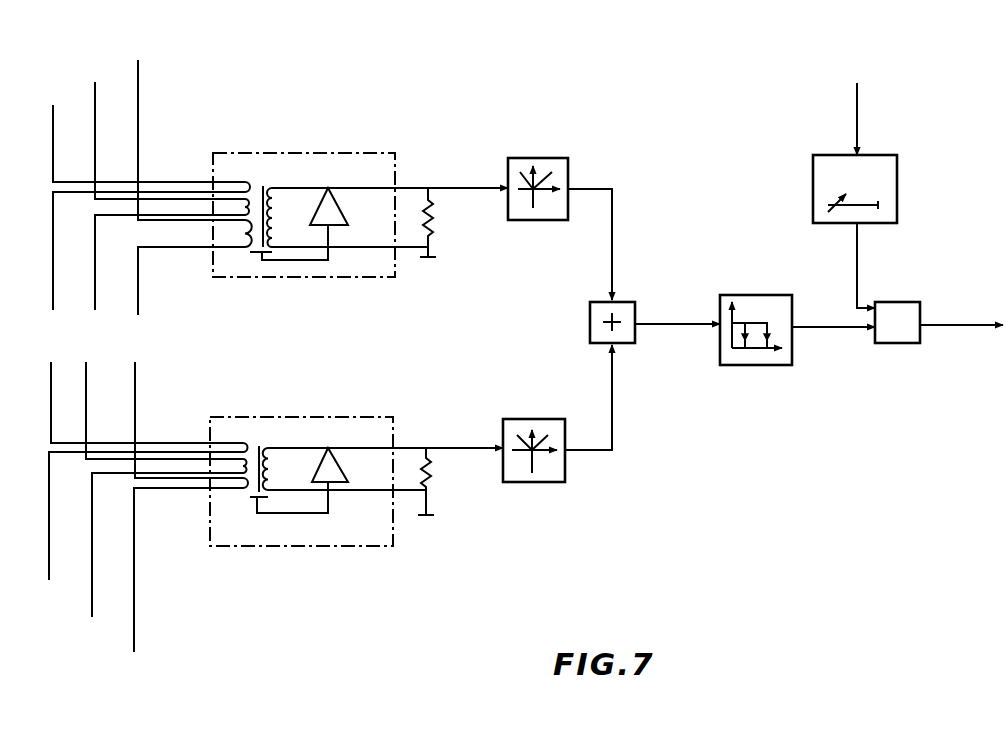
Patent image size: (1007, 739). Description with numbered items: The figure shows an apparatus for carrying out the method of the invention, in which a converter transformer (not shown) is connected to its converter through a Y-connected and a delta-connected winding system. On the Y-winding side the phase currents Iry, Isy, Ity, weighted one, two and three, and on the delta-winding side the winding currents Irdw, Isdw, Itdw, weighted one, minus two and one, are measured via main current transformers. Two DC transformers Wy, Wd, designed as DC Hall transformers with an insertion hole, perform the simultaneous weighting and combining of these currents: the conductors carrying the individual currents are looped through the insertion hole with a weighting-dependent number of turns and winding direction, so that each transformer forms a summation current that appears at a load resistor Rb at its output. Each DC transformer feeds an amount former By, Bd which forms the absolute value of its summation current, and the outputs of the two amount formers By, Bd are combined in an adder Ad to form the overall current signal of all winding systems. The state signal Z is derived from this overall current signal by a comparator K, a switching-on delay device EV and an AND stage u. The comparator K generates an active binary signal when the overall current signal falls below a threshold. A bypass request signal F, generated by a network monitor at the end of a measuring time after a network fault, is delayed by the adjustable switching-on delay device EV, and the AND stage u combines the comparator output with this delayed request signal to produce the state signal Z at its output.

The phase current Iry is at (144, 195).
The phase current Isy is at (166, 185).
The phase current Ity is at (190, 176).
The DC transformer Wy is at (300, 153).
The load resistor Rb is at (437, 225).
The amount former By is at (528, 158).
The adder Ad is at (589, 322).
The comparator K is at (757, 295).
The bypass request signal F is at (902, 104).
The switching-on delay device EV is at (897, 185).
The AND stage u is at (900, 302).
The state signal Z is at (958, 325).
The winding current Irdw is at (136, 485).
The winding current Isdw is at (159, 504).
The winding current Itdw is at (180, 520).
The DC transformer Wd is at (337, 546).
The amount former Bd is at (542, 419).